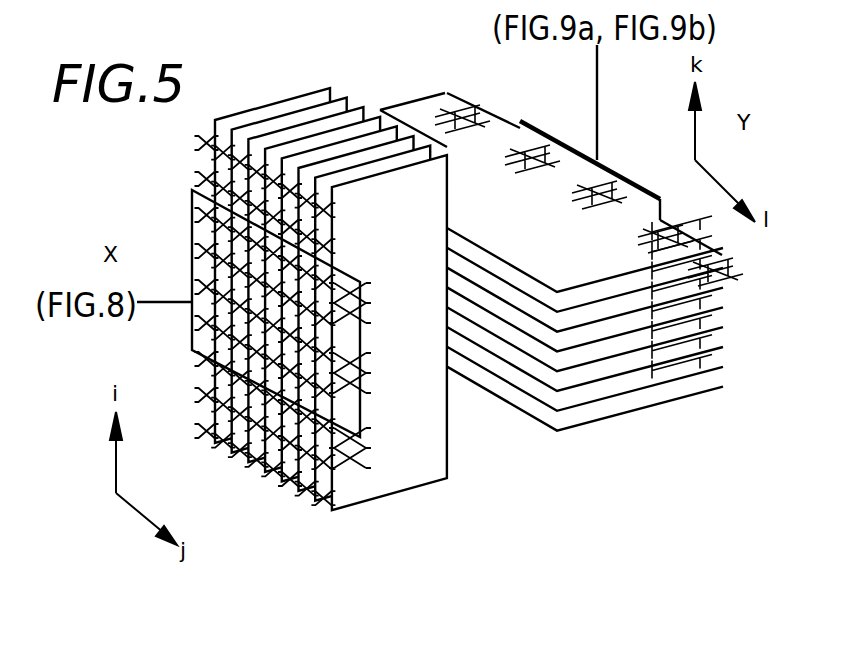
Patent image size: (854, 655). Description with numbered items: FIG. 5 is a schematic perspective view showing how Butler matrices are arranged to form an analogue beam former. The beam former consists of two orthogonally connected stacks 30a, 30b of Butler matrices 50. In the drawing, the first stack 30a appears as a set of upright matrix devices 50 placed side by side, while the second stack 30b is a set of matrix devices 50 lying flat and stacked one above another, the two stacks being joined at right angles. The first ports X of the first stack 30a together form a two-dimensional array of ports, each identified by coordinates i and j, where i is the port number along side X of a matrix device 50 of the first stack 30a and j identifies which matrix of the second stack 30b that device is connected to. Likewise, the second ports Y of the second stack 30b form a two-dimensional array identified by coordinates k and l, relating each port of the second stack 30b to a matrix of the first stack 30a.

The Butler matrix 50 is at (398, 104).
The first stack of Butler matrices 30a is at (447, 480).
The second stack of Butler matrices 30b is at (670, 407).